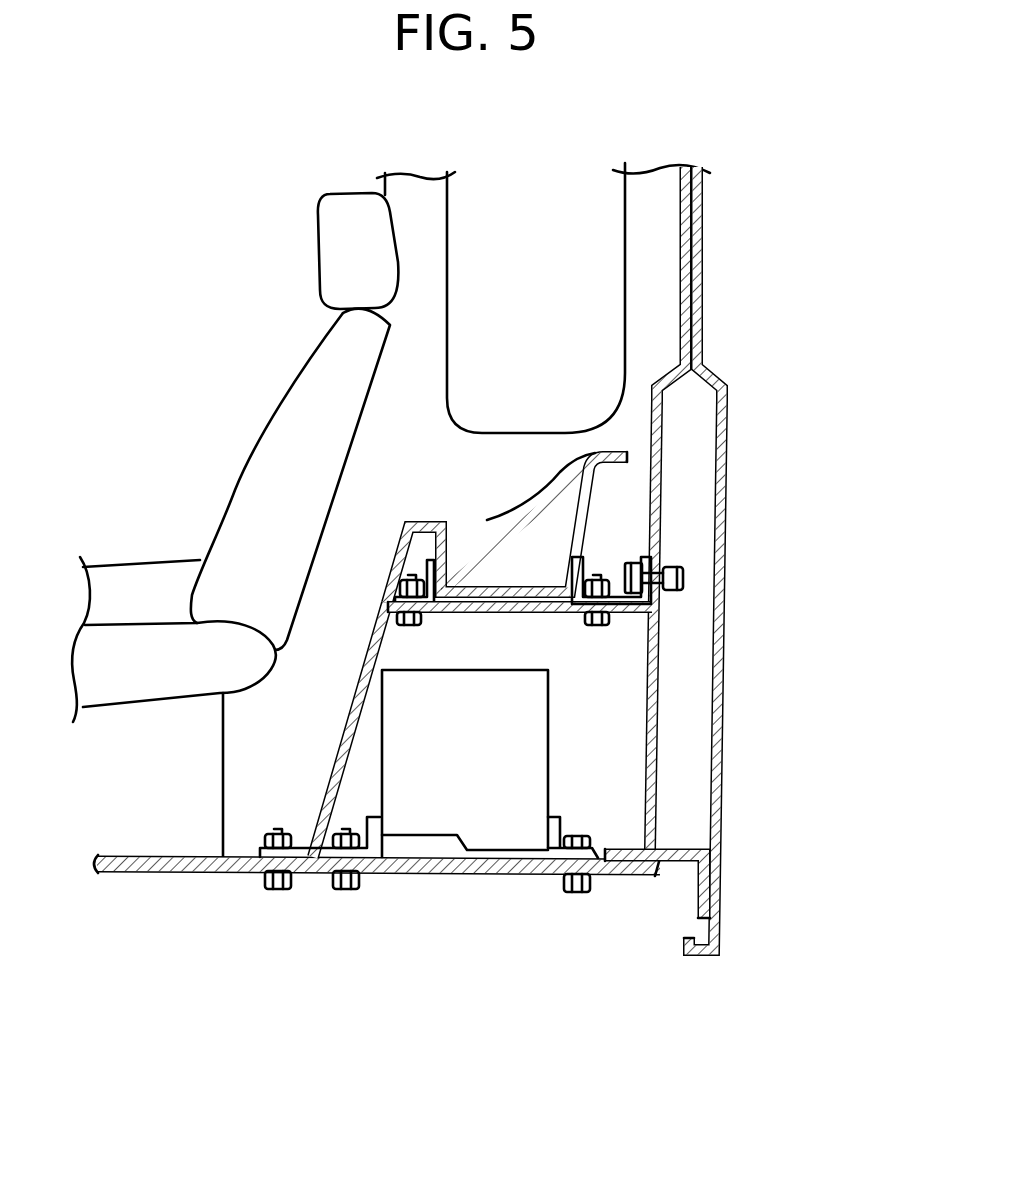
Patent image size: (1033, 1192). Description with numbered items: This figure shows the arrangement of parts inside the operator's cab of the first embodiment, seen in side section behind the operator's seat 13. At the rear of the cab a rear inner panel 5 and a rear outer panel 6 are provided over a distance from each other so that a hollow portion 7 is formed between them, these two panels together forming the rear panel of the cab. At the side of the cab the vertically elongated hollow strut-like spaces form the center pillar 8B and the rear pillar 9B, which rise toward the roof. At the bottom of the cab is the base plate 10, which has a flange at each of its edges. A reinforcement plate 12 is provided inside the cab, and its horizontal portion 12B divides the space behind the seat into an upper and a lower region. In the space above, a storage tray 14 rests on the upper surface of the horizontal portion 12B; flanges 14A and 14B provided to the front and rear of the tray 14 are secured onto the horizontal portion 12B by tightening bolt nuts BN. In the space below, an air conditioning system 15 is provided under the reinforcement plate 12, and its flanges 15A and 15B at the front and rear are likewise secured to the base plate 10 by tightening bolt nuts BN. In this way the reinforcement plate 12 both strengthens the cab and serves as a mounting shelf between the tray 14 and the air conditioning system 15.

The rear inner panel 5 is at (660, 842).
The rear outer panel 6 is at (722, 783).
The hollow portion 7 is at (688, 475).
The center pillar 8B is at (427, 254).
The rear pillar 9B is at (655, 287).
The base plate 10 is at (432, 874).
The reinforcement plate 12 is at (311, 775).
The horizontal portion 12B is at (507, 614).
The operator's seat 13 is at (275, 392).
The storage tray 14 is at (487, 518).
The flange 14A is at (395, 572).
The flange 14B is at (585, 557).
The air conditioning system 15 is at (475, 874).
The flange 15A is at (393, 874).
The flange 15B is at (594, 875).
The bolt nuts BN is at (598, 626).